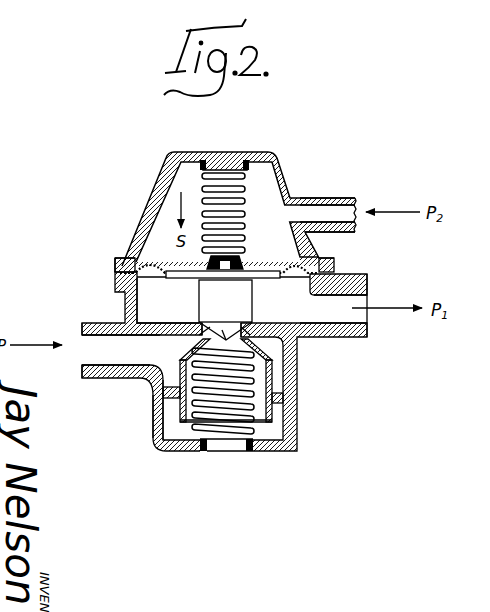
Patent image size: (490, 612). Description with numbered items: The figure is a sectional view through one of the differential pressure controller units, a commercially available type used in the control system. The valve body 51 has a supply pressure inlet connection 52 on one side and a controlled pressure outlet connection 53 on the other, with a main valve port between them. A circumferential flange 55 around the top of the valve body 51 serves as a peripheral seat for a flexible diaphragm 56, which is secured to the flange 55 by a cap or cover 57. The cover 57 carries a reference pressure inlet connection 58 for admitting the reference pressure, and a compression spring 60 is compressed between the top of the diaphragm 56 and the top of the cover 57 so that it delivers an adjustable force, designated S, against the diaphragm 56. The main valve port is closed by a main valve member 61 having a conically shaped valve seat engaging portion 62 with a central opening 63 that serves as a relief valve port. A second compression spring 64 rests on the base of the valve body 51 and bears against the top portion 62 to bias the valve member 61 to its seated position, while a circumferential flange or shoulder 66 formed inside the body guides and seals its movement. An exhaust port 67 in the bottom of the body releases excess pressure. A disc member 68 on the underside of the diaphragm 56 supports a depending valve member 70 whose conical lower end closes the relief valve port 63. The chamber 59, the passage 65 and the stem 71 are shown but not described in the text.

The valve body 51 is at (298, 366).
The supply pressure inlet connection 52 is at (103, 347).
The controlled pressure outlet connection 53 is at (352, 312).
The circumferential flange 55 is at (341, 274).
The flexible diaphragm 56 is at (150, 262).
The cap or cover 57 is at (168, 167).
The reference pressure inlet connection 58 is at (334, 198).
The chamber 59 is at (188, 322).
The compression spring 60 is at (247, 179).
The main valve member 61 is at (181, 410).
The conically shaped valve seat engaging portion 62 is at (179, 342).
The central opening 63 is at (254, 338).
The compression spring 64 is at (272, 371).
The passage wall 65 is at (168, 397).
The circumferential flange or shoulder 66 is at (298, 399).
The exhaust port 67 is at (218, 452).
The disc member 68 is at (272, 268).
The valve member 70 is at (244, 296).
The valve stem 71 is at (216, 340).